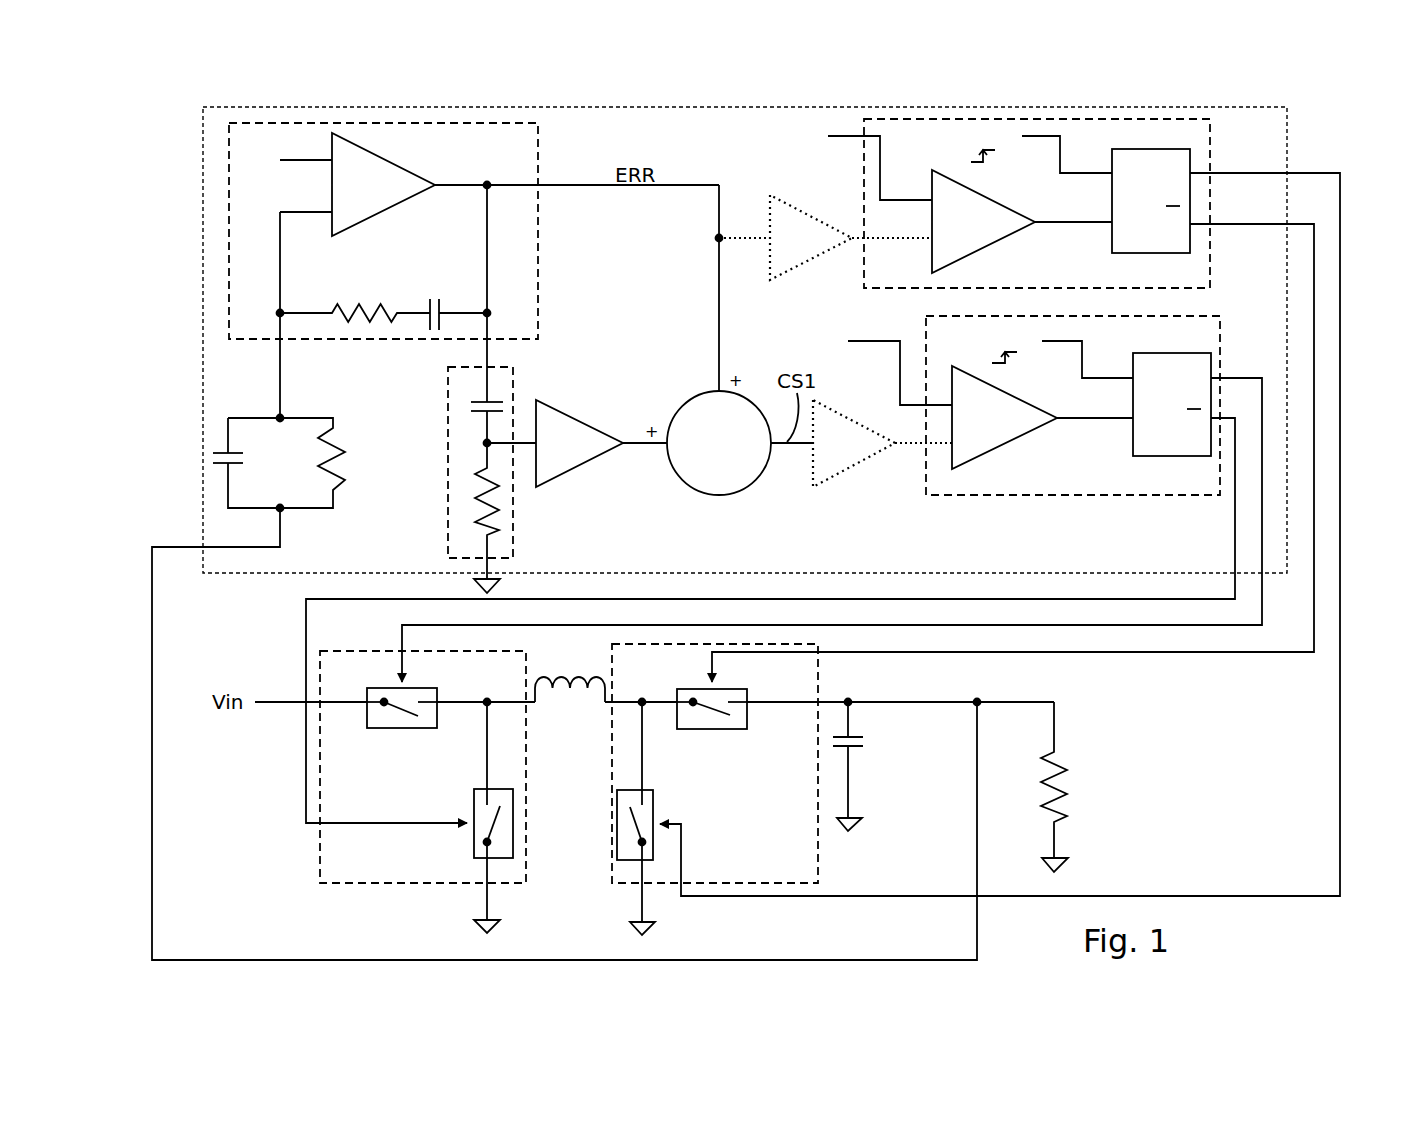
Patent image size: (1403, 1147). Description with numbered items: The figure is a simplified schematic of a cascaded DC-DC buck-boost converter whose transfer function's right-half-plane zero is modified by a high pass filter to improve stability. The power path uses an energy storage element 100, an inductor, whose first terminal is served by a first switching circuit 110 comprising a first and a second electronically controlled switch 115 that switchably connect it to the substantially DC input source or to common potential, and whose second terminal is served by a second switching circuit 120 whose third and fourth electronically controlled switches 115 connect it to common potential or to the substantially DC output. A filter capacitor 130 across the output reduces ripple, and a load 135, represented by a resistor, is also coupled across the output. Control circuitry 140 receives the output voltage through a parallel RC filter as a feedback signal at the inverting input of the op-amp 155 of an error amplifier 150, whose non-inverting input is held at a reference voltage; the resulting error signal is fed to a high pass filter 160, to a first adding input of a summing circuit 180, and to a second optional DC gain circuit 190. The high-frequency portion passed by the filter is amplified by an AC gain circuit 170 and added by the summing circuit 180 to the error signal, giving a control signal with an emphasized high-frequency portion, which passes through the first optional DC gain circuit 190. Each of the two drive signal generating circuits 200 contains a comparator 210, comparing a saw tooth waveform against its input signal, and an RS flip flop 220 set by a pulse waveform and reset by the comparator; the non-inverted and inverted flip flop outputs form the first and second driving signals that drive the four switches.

The energy storage element 100 is at (577, 696).
The first switching circuit 110 is at (320, 843).
The electronically controlled switch 115 is at (392, 728).
The second switching circuit 120 is at (612, 868).
The filter capacitor 130 is at (870, 738).
The load 135 is at (1065, 780).
The control circuitry 140 is at (1105, 573).
The error amplifier 150 is at (474, 270).
The op-amp 155 is at (382, 213).
The high pass filter 160 is at (448, 405).
The AC gain circuit 170 is at (552, 408).
The summing circuit 180 is at (765, 468).
The optional DC gain circuit 190 is at (797, 208).
The drive signal generating circuit 200 is at (1210, 262).
The comparator 210 is at (977, 252).
The RS flip flop 220 is at (1160, 253).